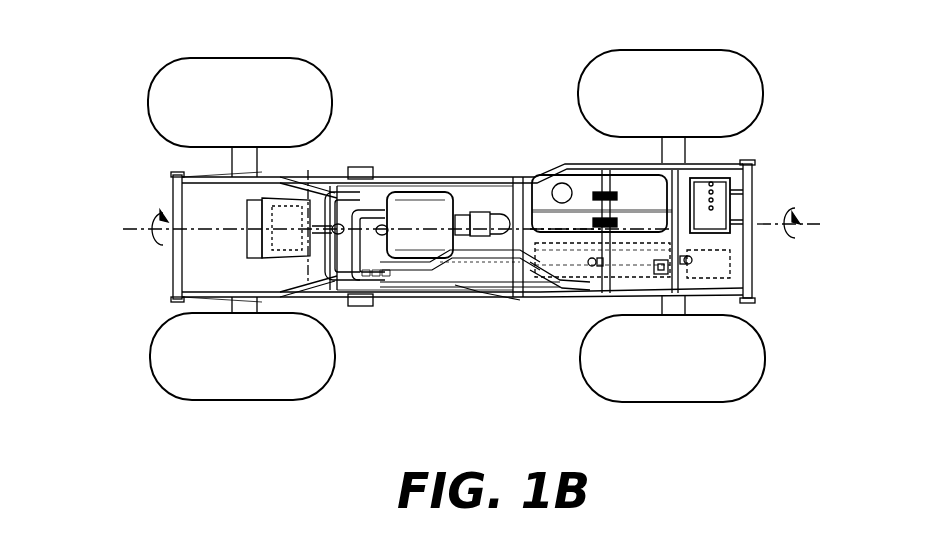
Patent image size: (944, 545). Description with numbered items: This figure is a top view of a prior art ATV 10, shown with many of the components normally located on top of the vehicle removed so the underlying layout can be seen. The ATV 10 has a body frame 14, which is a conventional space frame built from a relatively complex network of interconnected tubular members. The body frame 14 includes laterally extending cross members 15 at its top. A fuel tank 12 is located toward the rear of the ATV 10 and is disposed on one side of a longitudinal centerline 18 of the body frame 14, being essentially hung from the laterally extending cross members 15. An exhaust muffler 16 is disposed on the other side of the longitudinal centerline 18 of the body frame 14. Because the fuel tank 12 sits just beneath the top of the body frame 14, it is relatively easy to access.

The ATV 10 is at (136, 55).
The fuel tank 12 is at (578, 185).
The body frame 14 is at (518, 185).
The laterally extending cross members 15 is at (672, 296).
The exhaust muffler 16 is at (700, 270).
The longitudinal centerline 18 is at (140, 228).